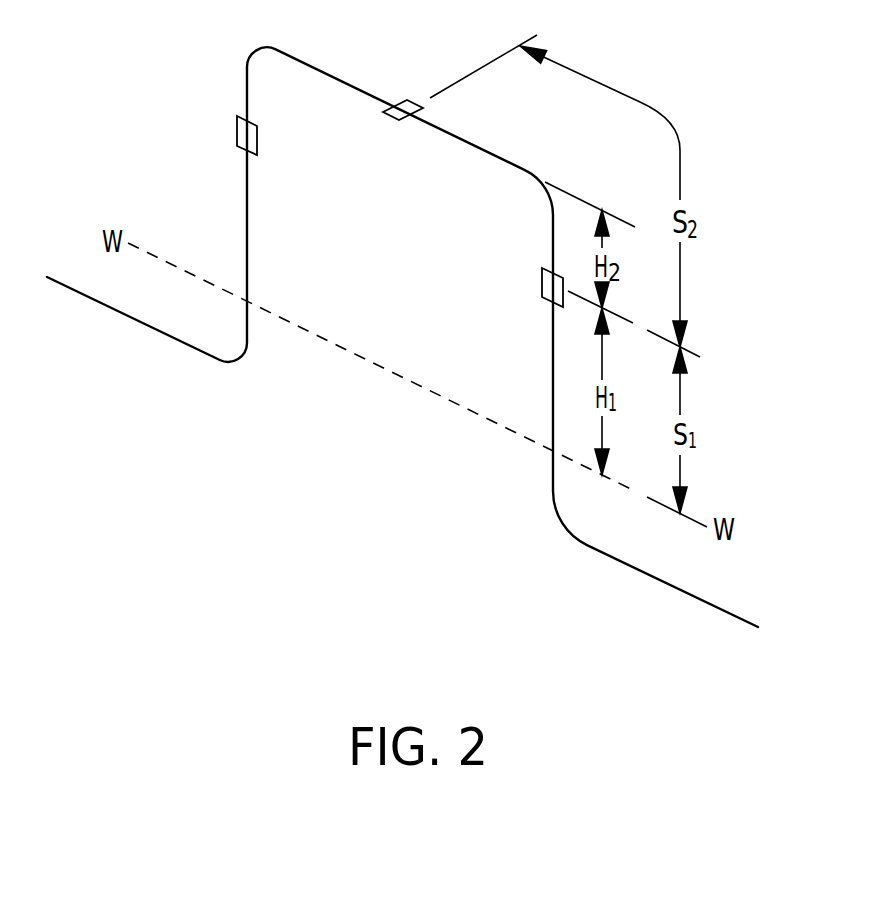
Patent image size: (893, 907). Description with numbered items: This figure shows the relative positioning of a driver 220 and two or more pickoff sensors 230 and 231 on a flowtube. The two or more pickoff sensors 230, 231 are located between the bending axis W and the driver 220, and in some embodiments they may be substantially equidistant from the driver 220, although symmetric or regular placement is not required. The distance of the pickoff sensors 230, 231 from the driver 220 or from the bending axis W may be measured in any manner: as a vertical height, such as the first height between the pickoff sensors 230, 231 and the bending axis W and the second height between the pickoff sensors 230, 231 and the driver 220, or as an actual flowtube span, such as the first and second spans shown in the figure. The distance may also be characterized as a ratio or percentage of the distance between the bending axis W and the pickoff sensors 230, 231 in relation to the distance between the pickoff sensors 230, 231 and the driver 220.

The driver 220 is at (401, 130).
The pickoff sensor 230 is at (268, 139).
The pickoff sensor 231 is at (527, 283).